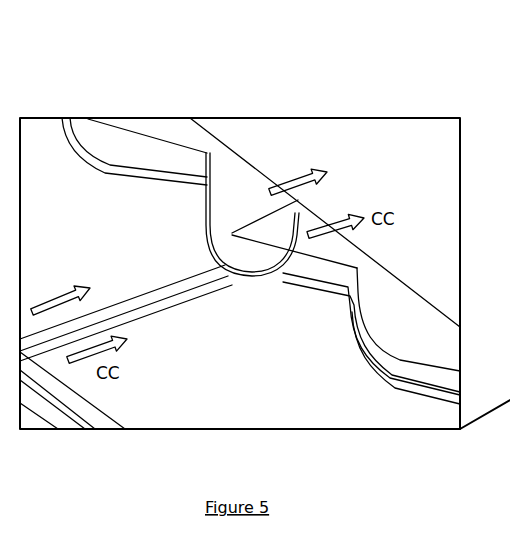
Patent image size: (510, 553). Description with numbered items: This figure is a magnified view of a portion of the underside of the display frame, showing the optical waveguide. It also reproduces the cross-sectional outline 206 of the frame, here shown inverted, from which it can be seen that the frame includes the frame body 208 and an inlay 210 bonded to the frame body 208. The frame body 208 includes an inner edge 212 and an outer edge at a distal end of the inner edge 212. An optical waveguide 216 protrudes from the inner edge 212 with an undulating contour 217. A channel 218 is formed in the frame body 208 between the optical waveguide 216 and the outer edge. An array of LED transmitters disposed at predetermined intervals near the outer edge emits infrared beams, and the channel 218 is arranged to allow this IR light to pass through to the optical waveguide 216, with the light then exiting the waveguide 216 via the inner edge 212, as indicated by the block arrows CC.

The cross-sectional outline 206 is at (243, 228).
The frame body 208 is at (137, 300).
The inlay 210 is at (163, 310).
The inner edge 212 is at (298, 200).
The optical waveguide 216 is at (232, 188).
The undulating contour 217 is at (207, 234).
The channel 218 is at (172, 269).